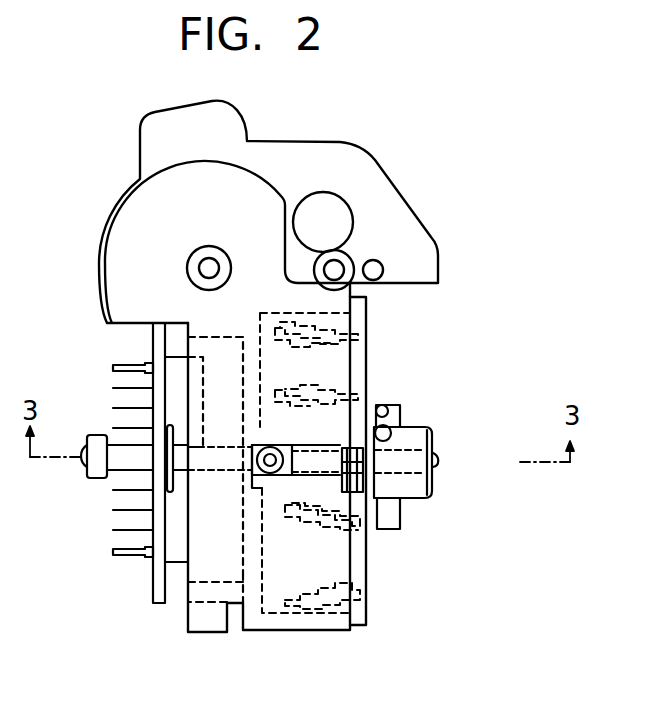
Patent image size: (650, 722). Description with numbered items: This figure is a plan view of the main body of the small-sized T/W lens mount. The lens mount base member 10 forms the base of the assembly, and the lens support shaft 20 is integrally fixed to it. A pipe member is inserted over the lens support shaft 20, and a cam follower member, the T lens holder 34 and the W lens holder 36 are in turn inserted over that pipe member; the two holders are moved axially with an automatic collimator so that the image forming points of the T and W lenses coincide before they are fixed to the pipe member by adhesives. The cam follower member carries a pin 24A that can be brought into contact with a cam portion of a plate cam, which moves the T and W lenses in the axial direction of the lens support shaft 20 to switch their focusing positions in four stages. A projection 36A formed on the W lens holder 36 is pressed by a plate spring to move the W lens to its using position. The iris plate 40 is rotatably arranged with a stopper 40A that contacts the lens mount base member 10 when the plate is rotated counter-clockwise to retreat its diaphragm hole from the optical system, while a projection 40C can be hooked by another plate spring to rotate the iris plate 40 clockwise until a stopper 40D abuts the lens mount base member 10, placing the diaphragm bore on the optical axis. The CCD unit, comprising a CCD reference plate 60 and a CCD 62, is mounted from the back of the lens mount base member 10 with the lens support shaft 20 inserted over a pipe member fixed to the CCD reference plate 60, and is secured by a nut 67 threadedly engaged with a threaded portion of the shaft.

The lens mount base member 10 is at (322, 632).
The lens support shaft 20 is at (438, 461).
The pin 24A is at (270, 463).
The T lens holder 34 is at (372, 340).
The W lens holder 36 is at (365, 593).
The projection 36A is at (375, 465).
The iris plate 40 is at (432, 423).
The stopper 40A is at (388, 407).
The projection 40C is at (415, 427).
The stopper 40D is at (390, 518).
The CCD reference plate 60 is at (157, 605).
The CCD 62 is at (172, 563).
The nut 67 is at (98, 478).